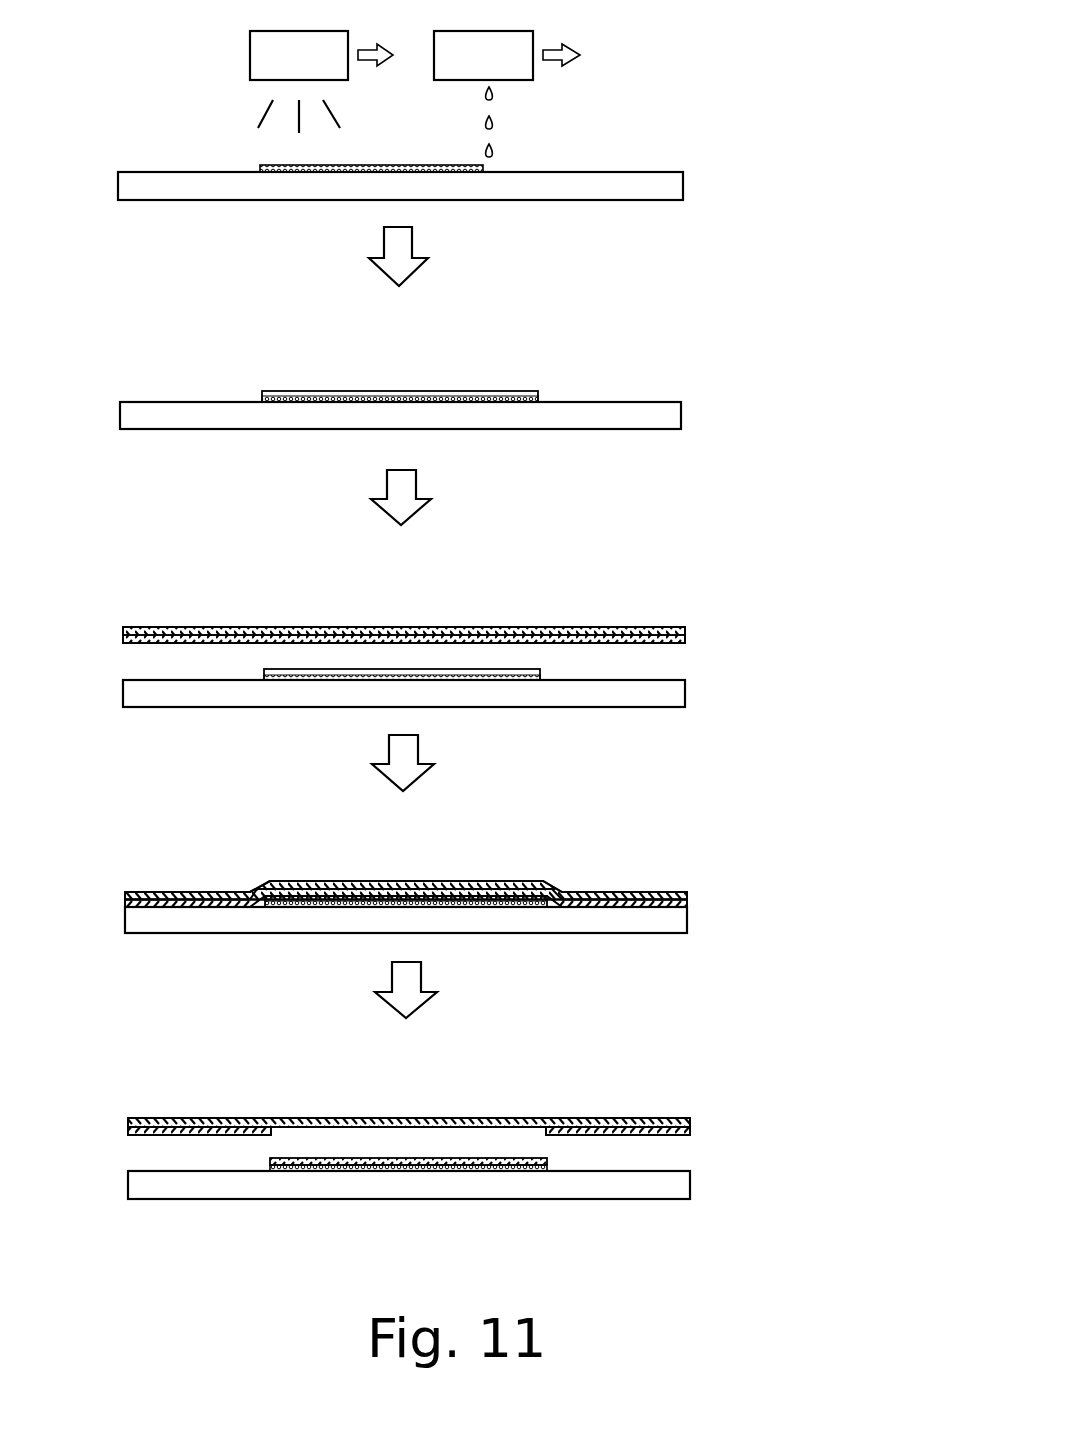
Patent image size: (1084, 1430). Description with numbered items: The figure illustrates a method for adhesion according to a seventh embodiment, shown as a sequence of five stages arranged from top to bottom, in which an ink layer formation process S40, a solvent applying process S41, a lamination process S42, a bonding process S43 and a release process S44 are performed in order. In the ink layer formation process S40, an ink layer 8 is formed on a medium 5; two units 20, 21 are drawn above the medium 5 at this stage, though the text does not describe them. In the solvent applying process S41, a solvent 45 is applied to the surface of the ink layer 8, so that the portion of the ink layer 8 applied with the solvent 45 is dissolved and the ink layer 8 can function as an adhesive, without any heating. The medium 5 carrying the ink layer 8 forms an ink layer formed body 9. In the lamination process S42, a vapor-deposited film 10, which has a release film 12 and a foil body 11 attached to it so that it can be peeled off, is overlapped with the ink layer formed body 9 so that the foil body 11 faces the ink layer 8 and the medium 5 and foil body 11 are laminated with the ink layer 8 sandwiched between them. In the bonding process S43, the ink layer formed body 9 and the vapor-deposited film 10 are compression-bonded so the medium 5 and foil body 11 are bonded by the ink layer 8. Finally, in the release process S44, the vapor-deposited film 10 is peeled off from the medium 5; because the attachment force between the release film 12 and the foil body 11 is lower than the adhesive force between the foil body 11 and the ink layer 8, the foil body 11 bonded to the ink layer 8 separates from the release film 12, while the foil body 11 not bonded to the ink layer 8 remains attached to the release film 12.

The medium 5 is at (683, 178).
The ink layer 8 is at (258, 168).
The ink layer formed body 9 is at (696, 405).
The vapor-deposited film 10 is at (690, 628).
The foil body 11 is at (123, 640).
The release film 12 is at (123, 631).
The coating head 20 is at (488, 31).
The irradiation unit 21 is at (313, 14).
The solvent 45 is at (493, 390).
The ink layer formation process S40 is at (726, 128).
The solvent applying process S41 is at (726, 328).
The lamination process S42 is at (730, 582).
The bonding process S43 is at (732, 846).
The release process S44 is at (737, 1073).